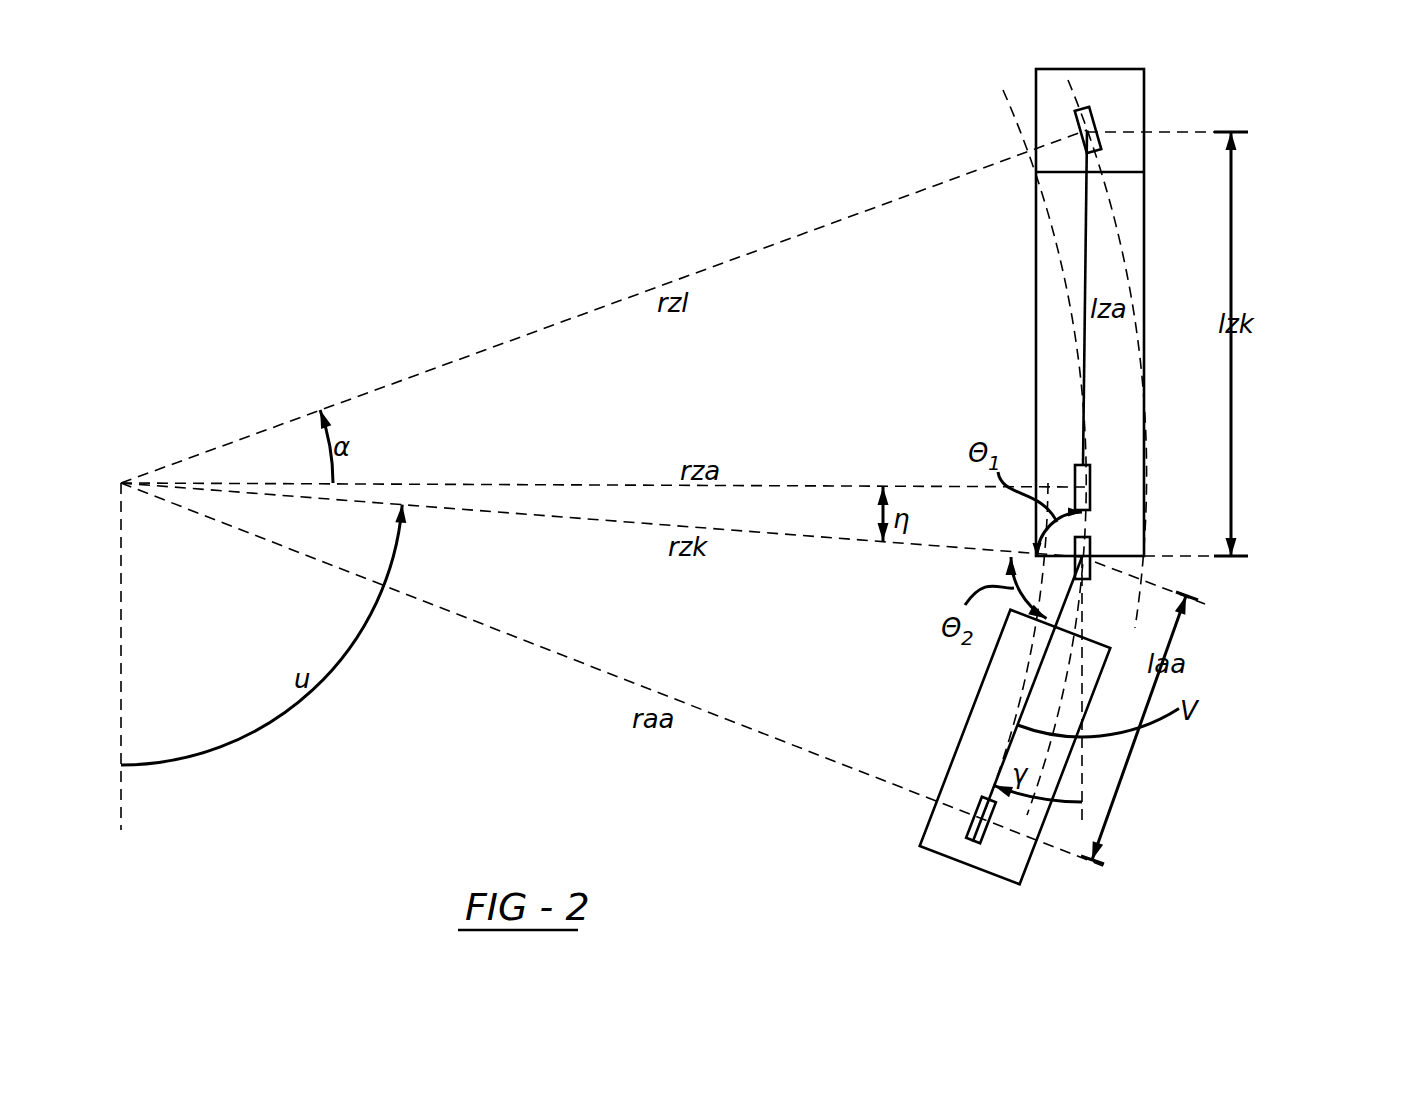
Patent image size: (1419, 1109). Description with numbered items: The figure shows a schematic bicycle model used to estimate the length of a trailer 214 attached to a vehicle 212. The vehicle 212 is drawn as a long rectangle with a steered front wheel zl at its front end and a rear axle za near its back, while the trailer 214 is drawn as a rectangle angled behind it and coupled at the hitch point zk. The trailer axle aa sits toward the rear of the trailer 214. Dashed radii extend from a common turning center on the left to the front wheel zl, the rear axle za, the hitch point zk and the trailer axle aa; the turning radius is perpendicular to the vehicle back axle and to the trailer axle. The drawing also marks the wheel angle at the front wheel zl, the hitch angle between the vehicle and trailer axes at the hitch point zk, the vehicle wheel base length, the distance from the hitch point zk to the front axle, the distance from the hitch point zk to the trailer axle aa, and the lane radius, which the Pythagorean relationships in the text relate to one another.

The vehicle 212 is at (1033, 324).
The trailer 214 is at (954, 724).
The steered front axle zl is at (1098, 121).
The front vehicle rear axle za is at (1100, 487).
The hitch point zk is at (1100, 554).
The trailer axle aa is at (991, 830).